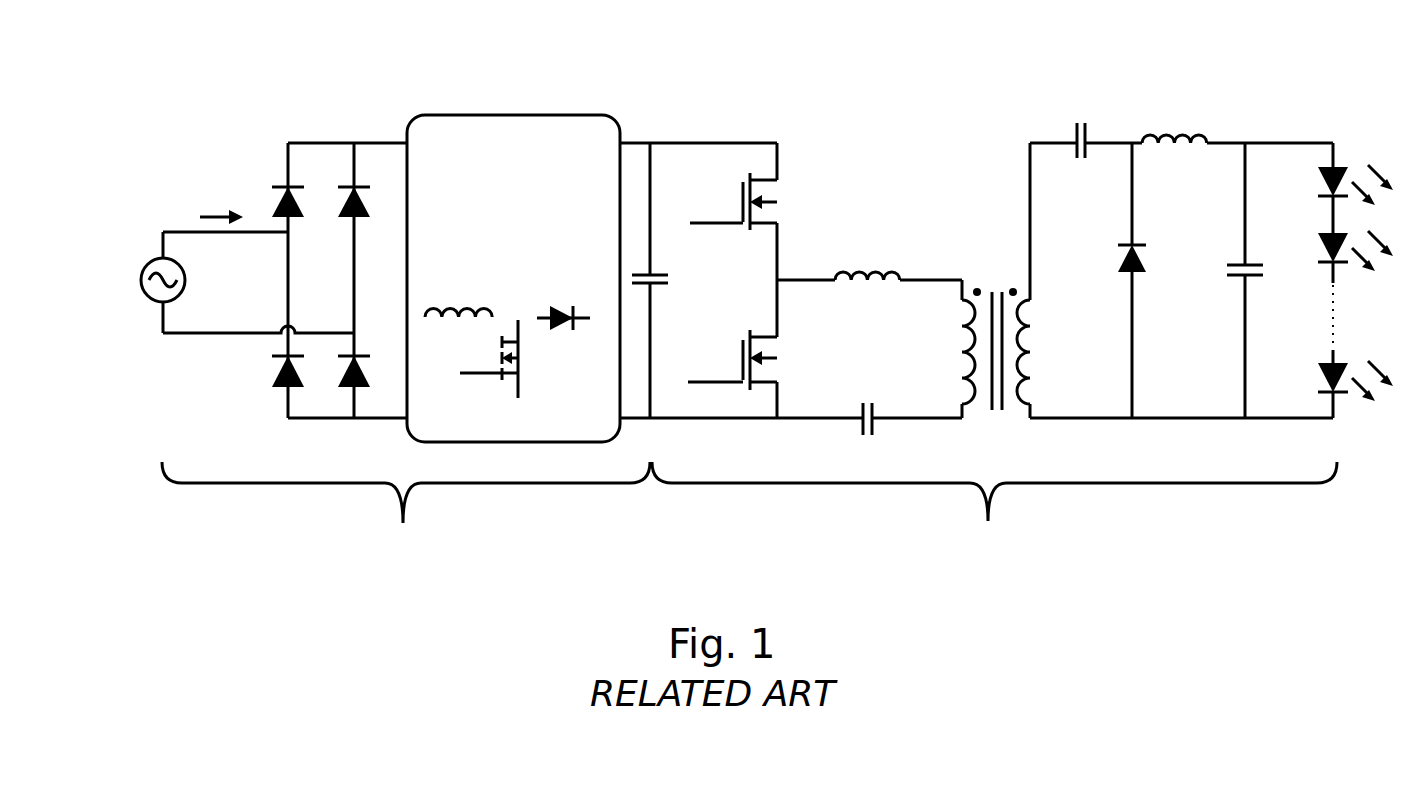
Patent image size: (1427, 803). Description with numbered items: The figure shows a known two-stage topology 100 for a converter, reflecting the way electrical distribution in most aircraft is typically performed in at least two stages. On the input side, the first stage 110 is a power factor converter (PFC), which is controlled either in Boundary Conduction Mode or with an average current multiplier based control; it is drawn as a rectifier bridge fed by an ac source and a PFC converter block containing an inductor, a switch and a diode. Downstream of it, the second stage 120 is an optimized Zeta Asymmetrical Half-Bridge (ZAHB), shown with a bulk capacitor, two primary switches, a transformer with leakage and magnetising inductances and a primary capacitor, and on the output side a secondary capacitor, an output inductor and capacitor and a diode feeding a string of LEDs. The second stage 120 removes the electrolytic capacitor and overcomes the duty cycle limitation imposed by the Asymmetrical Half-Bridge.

The two-stage topology 100 is at (180, 110).
The first stage 110 is at (377, 585).
The second stage 120 is at (1017, 585).